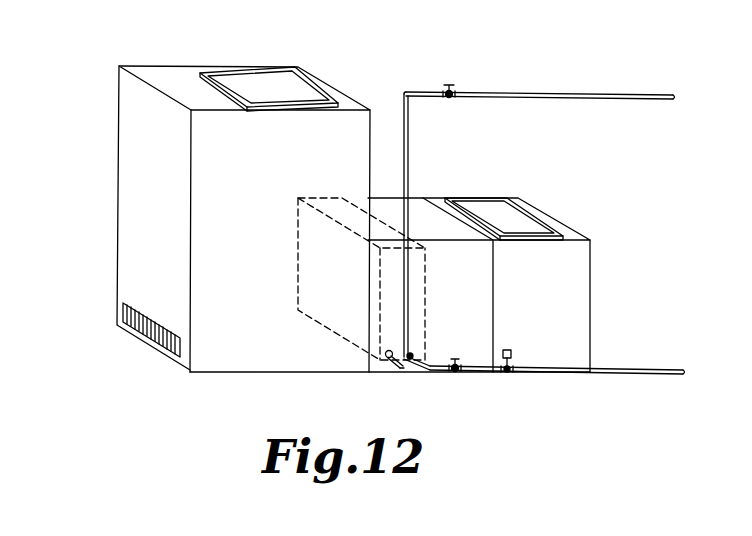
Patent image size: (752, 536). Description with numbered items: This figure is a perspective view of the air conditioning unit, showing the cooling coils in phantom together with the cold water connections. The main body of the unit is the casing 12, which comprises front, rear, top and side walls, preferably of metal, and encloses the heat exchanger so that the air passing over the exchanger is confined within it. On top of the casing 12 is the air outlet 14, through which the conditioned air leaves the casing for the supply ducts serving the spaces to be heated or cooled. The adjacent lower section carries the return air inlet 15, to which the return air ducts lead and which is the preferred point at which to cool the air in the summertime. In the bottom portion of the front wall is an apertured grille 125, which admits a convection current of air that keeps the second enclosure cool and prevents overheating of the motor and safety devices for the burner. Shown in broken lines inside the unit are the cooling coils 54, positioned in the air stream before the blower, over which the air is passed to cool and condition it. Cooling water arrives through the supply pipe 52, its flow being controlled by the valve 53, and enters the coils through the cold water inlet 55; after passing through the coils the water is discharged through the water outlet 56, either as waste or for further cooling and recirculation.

The casing 12 is at (132, 183).
The air outlet 14 is at (255, 85).
The return air inlet 15 is at (497, 212).
The supply pipe 52 is at (552, 90).
The valve 53 is at (450, 84).
The cooling coils 54 is at (354, 302).
The cold water inlet 55 is at (390, 359).
The water outlet 56 is at (412, 359).
The apertured grille 125 is at (138, 338).